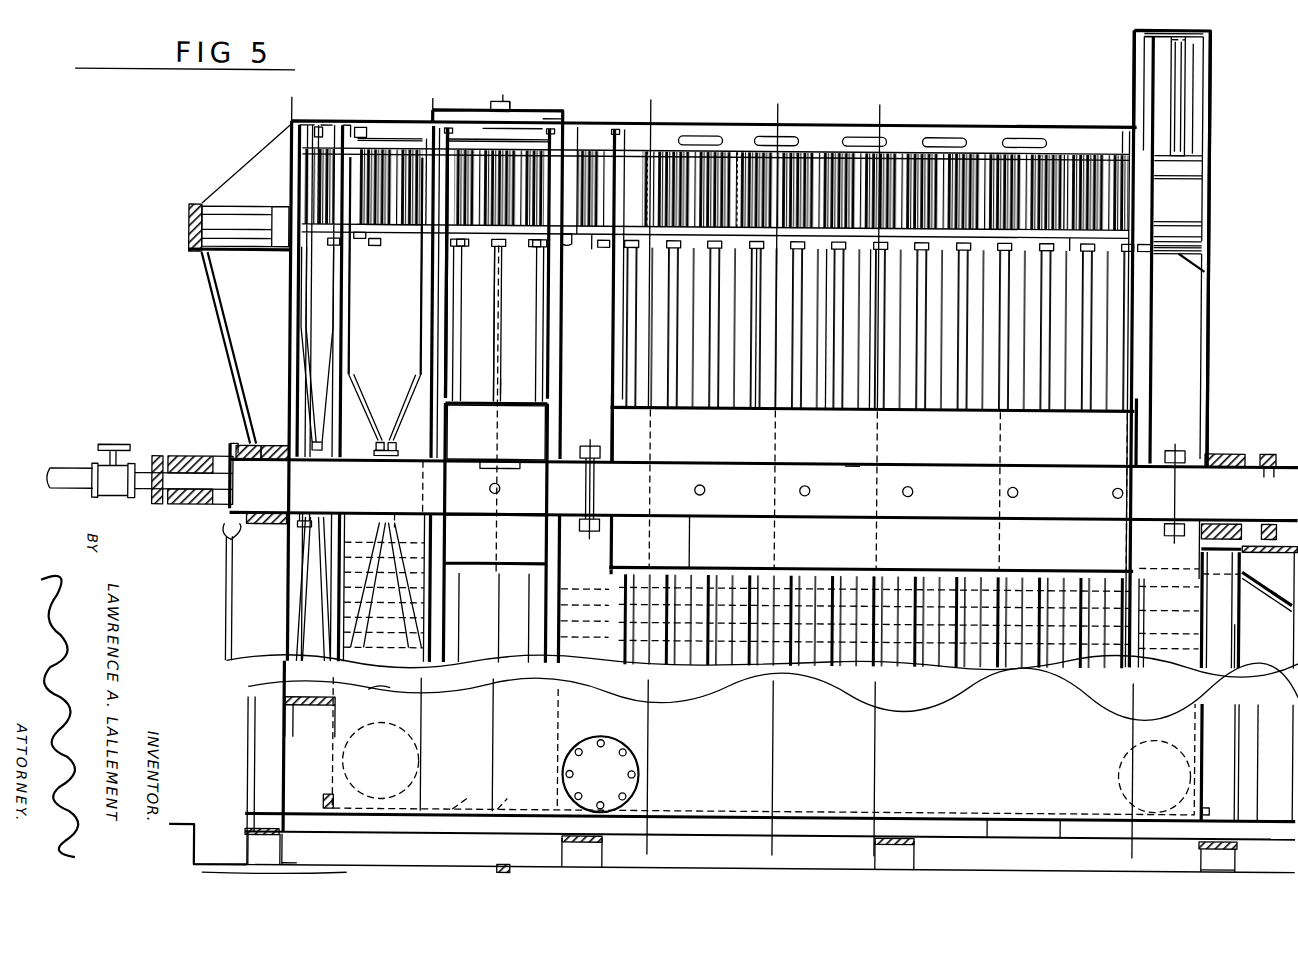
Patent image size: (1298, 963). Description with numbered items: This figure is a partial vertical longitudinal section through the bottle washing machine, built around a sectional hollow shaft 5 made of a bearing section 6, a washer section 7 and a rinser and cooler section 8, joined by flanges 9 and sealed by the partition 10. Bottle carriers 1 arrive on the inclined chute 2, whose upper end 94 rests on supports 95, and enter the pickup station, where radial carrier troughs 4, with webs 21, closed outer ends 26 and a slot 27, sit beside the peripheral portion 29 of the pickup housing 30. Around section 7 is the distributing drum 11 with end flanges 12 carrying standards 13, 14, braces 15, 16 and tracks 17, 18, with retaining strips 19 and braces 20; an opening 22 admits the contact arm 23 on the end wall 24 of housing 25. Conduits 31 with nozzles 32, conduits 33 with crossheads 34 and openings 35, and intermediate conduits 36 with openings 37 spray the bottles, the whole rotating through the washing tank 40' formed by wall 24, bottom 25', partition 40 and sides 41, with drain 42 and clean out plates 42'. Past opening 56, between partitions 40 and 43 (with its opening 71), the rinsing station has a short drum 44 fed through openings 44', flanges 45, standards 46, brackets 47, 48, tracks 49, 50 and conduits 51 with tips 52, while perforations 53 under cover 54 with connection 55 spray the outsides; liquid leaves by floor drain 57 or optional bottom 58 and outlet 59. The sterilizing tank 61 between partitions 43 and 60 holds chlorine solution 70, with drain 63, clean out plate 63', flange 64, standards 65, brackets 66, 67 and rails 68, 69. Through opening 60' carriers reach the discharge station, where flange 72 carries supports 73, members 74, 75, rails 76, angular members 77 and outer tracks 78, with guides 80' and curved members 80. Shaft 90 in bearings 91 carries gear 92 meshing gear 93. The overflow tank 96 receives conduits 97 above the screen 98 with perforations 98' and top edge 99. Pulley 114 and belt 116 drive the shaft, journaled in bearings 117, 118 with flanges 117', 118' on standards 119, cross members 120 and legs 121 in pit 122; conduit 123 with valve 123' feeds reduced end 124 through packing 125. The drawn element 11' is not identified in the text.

The bottle carriers 1 is at (200, 207).
The inclined runway or chute 2 is at (246, 252).
The carrier troughs 4 is at (1195, 129).
The sectional hollow shaft 5 is at (692, 520).
The bearing section 6 is at (1212, 515).
The washer section 7 is at (1130, 22).
The rinser and cooler section 8 is at (240, 470).
The flanges 9 is at (590, 444).
The web or partition 10 is at (594, 489).
The cylindrical casing or distributing drum 11 is at (833, 481).
The drum wall portion 11' is at (848, 491).
The end flanges 12 is at (616, 431).
The standards or supports 13 is at (775, 103).
The standards or supports 14 is at (648, 100).
The transverse angles or braces 15 is at (600, 250).
The transverse angles or braces 16 is at (624, 146).
The longitudinal rails or carrier tracks 17 is at (495, 96).
The longitudinal rails or carrier tracks 18 is at (424, 100).
The bottle retaining strips 19 is at (284, 100).
The transverse braces 20 is at (1016, 137).
The web or connecting portion 21 is at (1128, 62).
The opening 22 is at (1205, 242).
The carrier contact arm 23 is at (1204, 253).
The end wall 24 is at (1208, 290).
The housing 25 is at (945, 117).
The bottom 25' is at (1067, 842).
The closed outer ends 26 is at (1190, 42).
The slot 27 is at (1180, 74).
The peripheral portion 29 is at (1200, 27).
The carrier pickup housing 30 is at (1208, 104).
The spaced pipes or conduits 31 is at (830, 411).
The spray nozzles or tips 32 is at (870, 254).
The second set of pipes or conduits 33 is at (1018, 412).
The crossheads 34 is at (760, 138).
The spray openings 35 is at (870, 137).
The intermediate conduits 36 is at (720, 412).
The spray openings 37 is at (648, 192).
The partition 40 is at (549, 732).
The tank 40' is at (985, 841).
The housing sides 41 is at (990, 735).
The drain 42 is at (1213, 791).
The clean out plates 42' is at (876, 776).
The partition 43 is at (426, 464).
The short cylindrical drum 44 is at (493, 618).
The openings 44' is at (508, 477).
The end flanges 45 is at (448, 432).
The radiating standards or supports 46 is at (545, 350).
The transverse angles or brackets 47 is at (462, 249).
The transverse angles or brackets 48 is at (450, 112).
The angular rail or track sections 49 is at (532, 252).
The angular rail or track sections 50 is at (522, 130).
The spaced pipes or conduits 51 is at (540, 386).
The spray tips 52 is at (460, 258).
The perforations 53 is at (542, 120).
The cover 54 is at (509, 103).
The inlet or water connection 55 is at (495, 103).
The opening 56 is at (566, 246).
The drain 57 is at (508, 868).
The tank bottom 58 is at (460, 811).
The outlet 59 is at (505, 811).
The partition 60 is at (383, 587).
The opening 60' is at (350, 114).
The sterilizing station or tank 61 is at (386, 700).
The drain 63 is at (314, 789).
The clean out plate 63' is at (380, 760).
The circular flange 64 is at (392, 444).
The radiating standards 65 is at (406, 398).
The transverse arms or brackets 66 is at (356, 242).
The transverse arms or brackets 67 is at (358, 130).
The short track sections or rails 68 is at (382, 252).
The short track sections or rails 69 is at (376, 141).
The chlorine solution 70 is at (396, 516).
The opening 71 is at (424, 232).
The flange 72 is at (300, 530).
The radiating supports 73 is at (312, 408).
The transverse members 74 is at (313, 247).
The transverse members 75 is at (302, 120).
The tracks or rails 76 is at (326, 255).
The short angular members 77 is at (312, 129).
The outer rail or track members 78 is at (324, 126).
The curved members 80 is at (310, 729).
The side guide members 80' is at (285, 685).
The shaft 90 is at (226, 592).
The bearings 91 is at (225, 532).
The gear 92 is at (247, 518).
The gear 93 is at (232, 447).
The upper end 94 is at (190, 254).
The supports 95 is at (222, 355).
The auxiliary or overflow tank 96 is at (1262, 762).
The overflow conduits 97 is at (1226, 578).
The removable inclined screen or perforated member 98 is at (1267, 602).
The perforations 98' is at (1267, 587).
The top edge 99 is at (1250, 550).
The pulley 114 is at (1275, 450).
The belt 116 is at (1266, 450).
The bearing 117 is at (1225, 432).
The flange 117' is at (1230, 488).
The bearing 118 is at (269, 421).
The flange 118' is at (230, 421).
The standards 119 is at (1240, 650).
The cross members 120 is at (286, 840).
The legs or supports 121 is at (290, 865).
The pit 122 is at (218, 812).
The conduit 123 is at (70, 494).
The shut-off valve 123' is at (120, 482).
The reduced end 124 is at (196, 460).
The packing means 125 is at (156, 460).